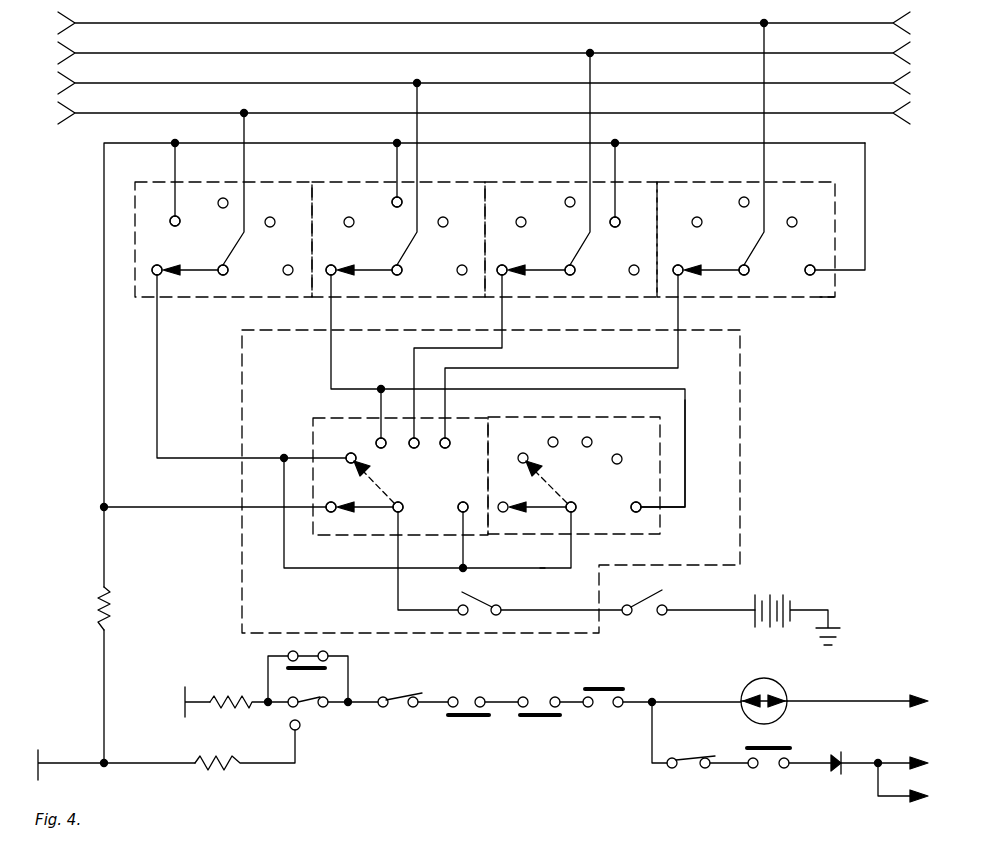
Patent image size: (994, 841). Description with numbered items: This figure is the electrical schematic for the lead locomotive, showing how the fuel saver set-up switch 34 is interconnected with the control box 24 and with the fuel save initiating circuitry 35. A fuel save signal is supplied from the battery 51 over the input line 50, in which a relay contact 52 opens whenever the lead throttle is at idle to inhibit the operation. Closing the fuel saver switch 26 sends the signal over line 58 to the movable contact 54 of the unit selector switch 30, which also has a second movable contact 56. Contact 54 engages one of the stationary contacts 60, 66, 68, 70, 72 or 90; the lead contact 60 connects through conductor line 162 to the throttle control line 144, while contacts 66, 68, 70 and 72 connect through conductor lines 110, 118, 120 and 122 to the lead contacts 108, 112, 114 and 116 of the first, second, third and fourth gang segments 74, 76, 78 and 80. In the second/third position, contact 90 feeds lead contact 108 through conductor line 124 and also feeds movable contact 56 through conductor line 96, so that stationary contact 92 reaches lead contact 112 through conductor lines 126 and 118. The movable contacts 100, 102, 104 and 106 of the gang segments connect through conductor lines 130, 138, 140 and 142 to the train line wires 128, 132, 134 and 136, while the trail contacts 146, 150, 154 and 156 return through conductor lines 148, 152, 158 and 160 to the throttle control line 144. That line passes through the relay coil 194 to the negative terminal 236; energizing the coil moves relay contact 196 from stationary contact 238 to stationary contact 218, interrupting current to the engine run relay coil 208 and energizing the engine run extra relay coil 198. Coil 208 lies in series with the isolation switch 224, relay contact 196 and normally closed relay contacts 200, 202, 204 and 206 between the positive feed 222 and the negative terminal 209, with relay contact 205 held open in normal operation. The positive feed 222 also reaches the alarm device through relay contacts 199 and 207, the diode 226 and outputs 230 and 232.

The train line wire 136 is at (151, 21).
The train line wire 134 is at (151, 51).
The train line wire 132 is at (151, 81).
The train line wire 128 is at (151, 111).
The throttle control line 144 is at (100, 430).
The conductor line 148 is at (178, 158).
The conductor line 130 is at (248, 158).
The conductor 152 is at (390, 158).
The conductor line 138 is at (420, 98).
The conductor line 158 is at (618, 158).
The conductor line 140 is at (592, 98).
The conductor line 142 is at (766, 98).
The conductor line 160 is at (868, 202).
The first gang segment 74 is at (204, 300).
The second gang segment 76 is at (404, 300).
The third gang segment 78 is at (597, 300).
The fourth gang segment 80 is at (794, 300).
The fuel saver set-up switch 34 is at (822, 306).
The number 2 trail stationary contact 146 is at (180, 224).
The number 3 trail contact 150 is at (400, 207).
The fourth trail contact 154 is at (618, 227).
The fifth trail contact 156 is at (806, 258).
The lead contact 108 is at (168, 252).
The lead contact 112 is at (342, 252).
The lead contact 114 is at (513, 252).
The lead contact 116 is at (690, 252).
The movable contact 100 is at (213, 276).
The movable contact 102 is at (387, 276).
The movable contact 104 is at (560, 276).
The movable contact 106 is at (735, 276).
The conductor line 110 is at (160, 394).
The conductor line 118 is at (332, 380).
The conductor line 120 is at (412, 350).
The conductor line 122 is at (588, 364).
The conductor line 126 is at (686, 456).
The control box 24 is at (764, 487).
The unit selector switch 30 is at (360, 540).
The fuel saver switch 26 is at (482, 600).
The stationary contact 66 is at (352, 454).
The stationary contact 68 is at (377, 446).
The stationary contact 70 is at (410, 446).
The stationary contact 72 is at (456, 434).
The stationary contact 60 is at (328, 504).
The movable contact 54 is at (390, 512).
The stationary contact 90 is at (460, 502).
The movable contact 56 is at (577, 512).
The stationary contact 92 is at (632, 502).
The conductor line 96 is at (544, 569).
The conductor line 124 is at (310, 570).
The line 58 is at (396, 586).
The relay contact 52 is at (648, 596).
The input line 50 is at (690, 610).
The battery 51 is at (793, 594).
The conductor line 162 is at (190, 510).
The relay coil 194 is at (110, 600).
The negative terminal 236 is at (42, 762).
The coil of engine run extra relay 198 is at (206, 768).
The stationary contact 218 is at (292, 745).
The negative terminal 209 is at (182, 702).
The engine run relay coil 208 is at (254, 700).
The stationary contact 238 is at (288, 706).
The relay contact 196 is at (314, 708).
The relay contact 205 is at (294, 670).
The relay contact 206 is at (392, 696).
The relay contact 204 is at (474, 716).
The relay contact 202 is at (534, 716).
The relay contact 200 is at (610, 688).
The fuel save initiating circuitry 35 is at (494, 680).
The isolation switch 224 is at (778, 678).
The positive feed 222 is at (918, 694).
The relay contact 199 is at (702, 750).
The relay contact 207 is at (778, 750).
The diode 226 is at (838, 772).
The output 230 is at (928, 734).
The output 232 is at (916, 798).